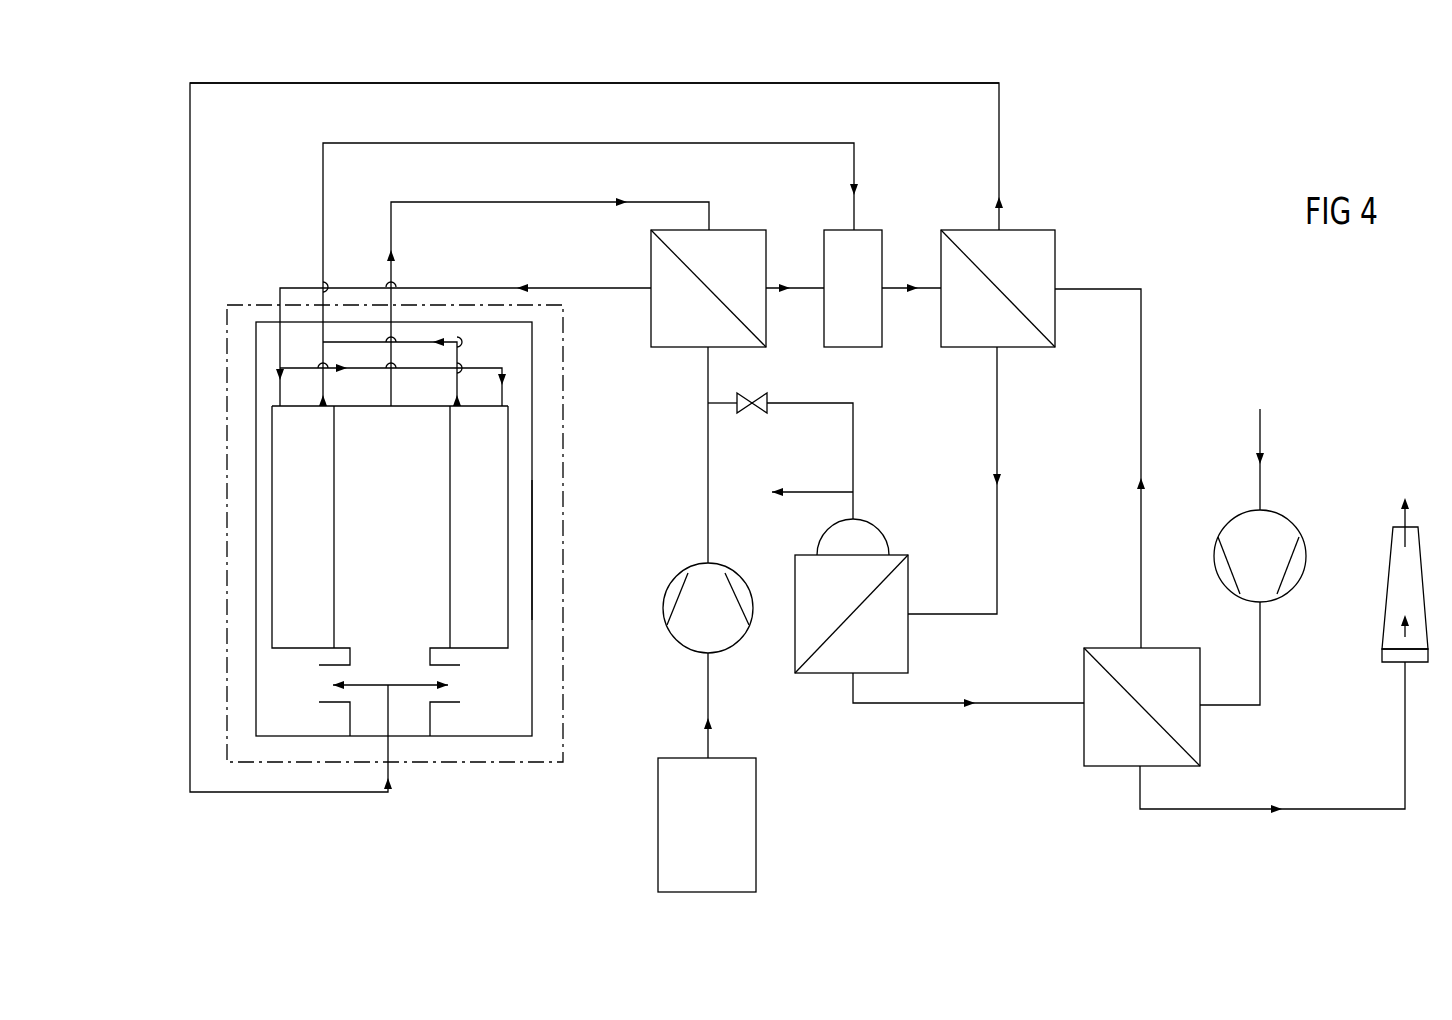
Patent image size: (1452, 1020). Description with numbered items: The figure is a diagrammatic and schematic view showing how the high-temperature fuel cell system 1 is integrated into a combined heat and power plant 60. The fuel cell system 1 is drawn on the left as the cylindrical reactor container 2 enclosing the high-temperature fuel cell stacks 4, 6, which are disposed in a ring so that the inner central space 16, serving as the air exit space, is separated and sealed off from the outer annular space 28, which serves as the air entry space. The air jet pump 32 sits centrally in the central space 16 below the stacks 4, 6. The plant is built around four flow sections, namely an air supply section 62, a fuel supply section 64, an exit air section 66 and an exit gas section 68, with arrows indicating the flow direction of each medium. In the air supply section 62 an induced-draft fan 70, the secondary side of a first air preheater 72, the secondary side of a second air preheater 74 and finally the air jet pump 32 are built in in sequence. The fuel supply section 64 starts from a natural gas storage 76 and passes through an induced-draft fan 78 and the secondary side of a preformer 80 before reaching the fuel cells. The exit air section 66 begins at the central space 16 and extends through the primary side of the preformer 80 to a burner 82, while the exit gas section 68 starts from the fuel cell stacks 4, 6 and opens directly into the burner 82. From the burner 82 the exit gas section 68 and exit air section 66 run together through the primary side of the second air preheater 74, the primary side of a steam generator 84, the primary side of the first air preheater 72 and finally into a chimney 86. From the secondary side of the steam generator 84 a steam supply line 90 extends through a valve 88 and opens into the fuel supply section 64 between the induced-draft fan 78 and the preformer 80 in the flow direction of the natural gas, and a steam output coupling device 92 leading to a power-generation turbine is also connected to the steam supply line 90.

The high-temperature fuel cell system 1 is at (411, 598).
The cylindrical reactor container 2 is at (532, 519).
The high-temperature fuel cell stack 4 is at (450, 596).
The high-temperature fuel cell stack 6 is at (334, 550).
The central space 16 is at (406, 486).
The annular space 28 is at (522, 560).
The air jet pump 32 is at (411, 751).
The combined heat and power plant 60 is at (736, 100).
The air supply section 62 is at (190, 190).
The fuel supply section 64 is at (595, 285).
The exit air section 66 is at (392, 212).
The exit gas section 68 is at (323, 238).
The induced-draft fan 70 is at (1290, 520).
The first air preheater 72 is at (1170, 648).
The second air preheater 74 is at (1058, 243).
The natural gas storage 76 is at (757, 840).
The induced-draft fan 78 is at (735, 575).
The preformer 80 is at (668, 350).
The burner 82 is at (868, 230).
The steam generator 84 is at (900, 555).
The chimney 86 is at (1418, 540).
The valve 88 is at (770, 396).
The steam supply line 90 is at (855, 438).
The steam output coupling device 92 is at (810, 490).